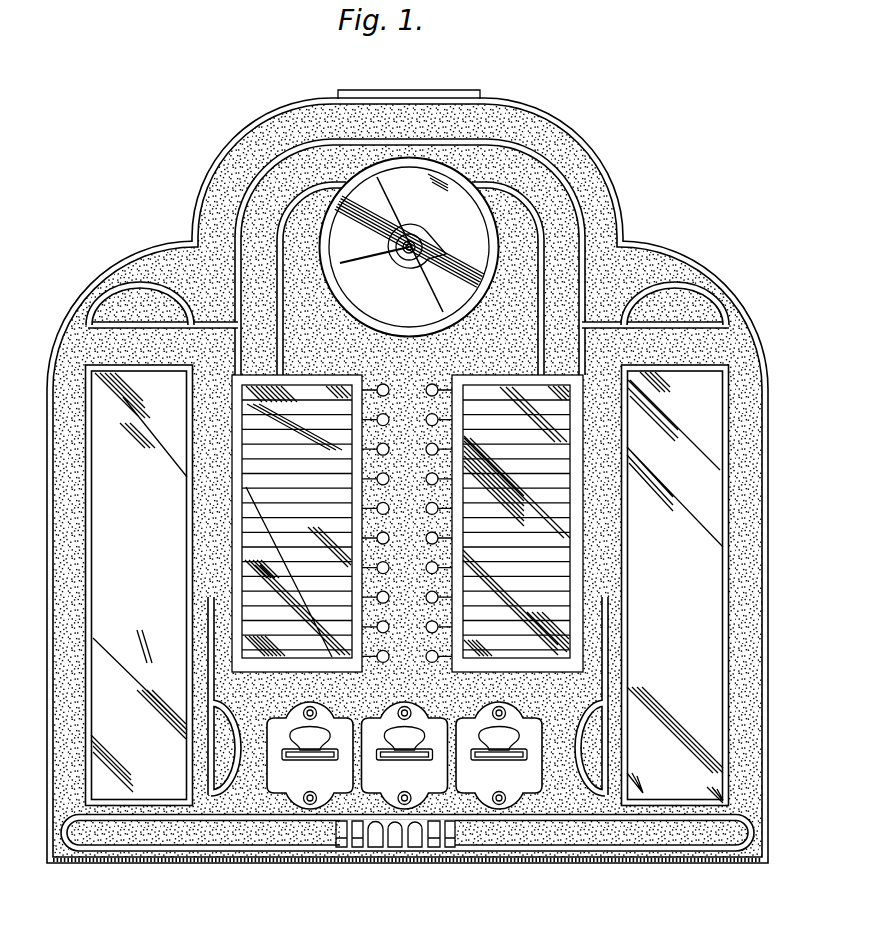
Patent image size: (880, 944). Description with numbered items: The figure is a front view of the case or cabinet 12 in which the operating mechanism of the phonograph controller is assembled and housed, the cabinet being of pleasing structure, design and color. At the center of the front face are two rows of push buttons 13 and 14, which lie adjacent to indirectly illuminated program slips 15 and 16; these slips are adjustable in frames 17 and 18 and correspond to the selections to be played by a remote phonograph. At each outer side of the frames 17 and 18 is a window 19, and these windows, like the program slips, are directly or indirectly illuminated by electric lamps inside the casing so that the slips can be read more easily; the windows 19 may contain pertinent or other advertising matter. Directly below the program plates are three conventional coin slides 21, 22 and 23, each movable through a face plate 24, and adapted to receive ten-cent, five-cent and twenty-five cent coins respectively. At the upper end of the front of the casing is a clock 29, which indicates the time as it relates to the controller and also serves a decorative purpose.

The case or cabinet 12 is at (612, 196).
The push buttons 13 is at (372, 458).
The push buttons 14 is at (440, 432).
The program slip 15 is at (247, 394).
The program slip 16 is at (558, 425).
The frame 17 is at (248, 552).
The frame 18 is at (563, 499).
The window 19 is at (125, 788).
The coin slide 21 is at (302, 753).
The coin slide 22 is at (410, 753).
The coin slide 23 is at (503, 755).
The face plate 24 is at (325, 792).
The clock 29 is at (450, 205).